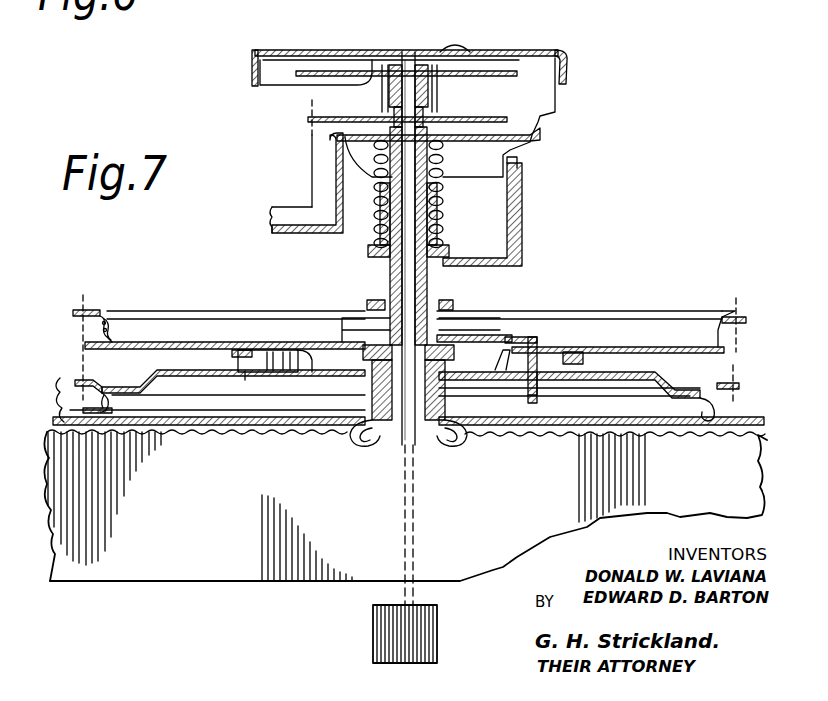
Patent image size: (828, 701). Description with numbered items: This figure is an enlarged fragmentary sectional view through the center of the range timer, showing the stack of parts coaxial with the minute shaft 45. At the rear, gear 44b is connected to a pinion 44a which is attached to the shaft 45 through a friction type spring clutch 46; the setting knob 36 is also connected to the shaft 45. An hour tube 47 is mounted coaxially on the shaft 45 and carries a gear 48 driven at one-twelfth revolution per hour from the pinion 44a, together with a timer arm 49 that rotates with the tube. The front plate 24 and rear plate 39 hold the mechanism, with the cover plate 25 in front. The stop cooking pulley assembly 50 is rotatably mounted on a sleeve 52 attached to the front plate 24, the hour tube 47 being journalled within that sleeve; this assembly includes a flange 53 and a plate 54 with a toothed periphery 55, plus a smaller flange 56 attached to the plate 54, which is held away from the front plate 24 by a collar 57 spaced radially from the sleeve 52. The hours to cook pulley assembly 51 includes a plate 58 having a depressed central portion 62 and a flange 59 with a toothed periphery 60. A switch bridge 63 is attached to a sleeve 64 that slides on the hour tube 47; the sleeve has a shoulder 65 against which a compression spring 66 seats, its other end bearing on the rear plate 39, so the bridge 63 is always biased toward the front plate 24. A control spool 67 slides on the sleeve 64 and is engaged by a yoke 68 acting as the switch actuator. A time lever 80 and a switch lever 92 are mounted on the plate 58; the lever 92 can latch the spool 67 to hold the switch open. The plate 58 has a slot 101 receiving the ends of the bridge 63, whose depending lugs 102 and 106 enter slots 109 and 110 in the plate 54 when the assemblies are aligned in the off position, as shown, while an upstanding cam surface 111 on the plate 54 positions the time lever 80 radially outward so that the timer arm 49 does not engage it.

The front plate 24 is at (60, 408).
The cover plate 25 is at (152, 573).
The setting knob 36 is at (437, 631).
The rear plate 39 is at (272, 225).
The pinion 44a is at (438, 96).
The gear 44b is at (522, 80).
The shaft 45 is at (407, 60).
The friction type spring clutch 46 is at (480, 71).
The hour tube 47 is at (429, 150).
The gear 48 is at (308, 119).
The timer arm 49 is at (365, 347).
The stop cooking pulley assembly 50 is at (720, 395).
The hours to cook pulley assembly 51 is at (737, 317).
The sleeve 52 is at (383, 420).
The flange 53 is at (687, 420).
The plate 54 is at (651, 420).
The toothed periphery 55 is at (77, 381).
The flange 56 is at (245, 365).
The collar 57 is at (344, 428).
The plate 58 is at (158, 341).
The flange 59 is at (102, 313).
The toothed periphery 60 is at (74, 311).
The depressed central portion 62 is at (497, 350).
The switch bridge 63 is at (510, 337).
The sleeve 64 is at (490, 308).
The shoulder 65 is at (378, 243).
The compression spring 66 is at (444, 213).
The control spool 67 is at (368, 254).
The yoke 68 is at (514, 218).
The time lever 80 is at (242, 350).
The switch lever 92 is at (600, 347).
The slot 101 is at (297, 367).
The depending lug 102 is at (532, 390).
The depending lug 106 is at (313, 393).
The slot 109 is at (290, 363).
The slot 110 is at (512, 380).
The cam surface 111 is at (216, 423).